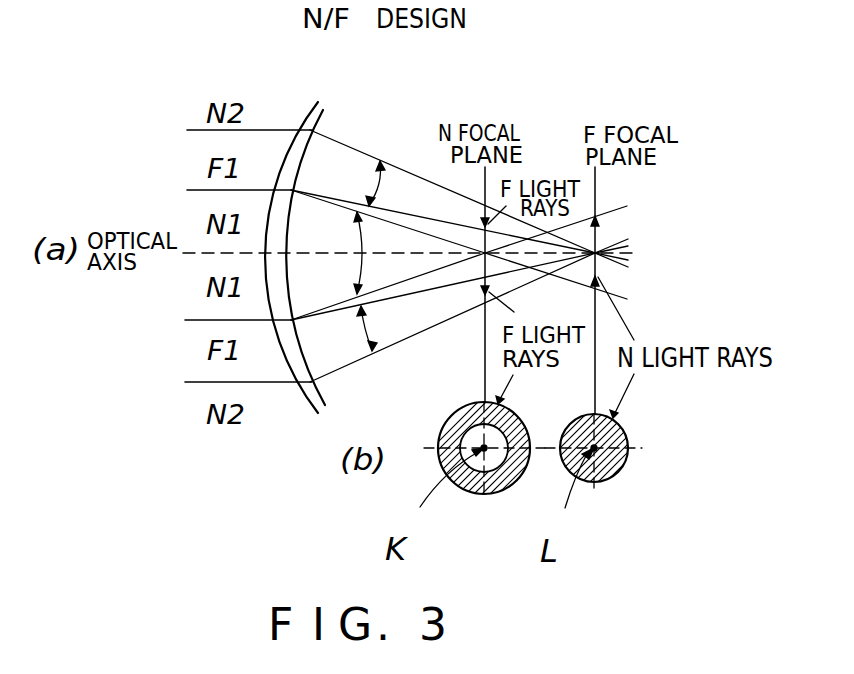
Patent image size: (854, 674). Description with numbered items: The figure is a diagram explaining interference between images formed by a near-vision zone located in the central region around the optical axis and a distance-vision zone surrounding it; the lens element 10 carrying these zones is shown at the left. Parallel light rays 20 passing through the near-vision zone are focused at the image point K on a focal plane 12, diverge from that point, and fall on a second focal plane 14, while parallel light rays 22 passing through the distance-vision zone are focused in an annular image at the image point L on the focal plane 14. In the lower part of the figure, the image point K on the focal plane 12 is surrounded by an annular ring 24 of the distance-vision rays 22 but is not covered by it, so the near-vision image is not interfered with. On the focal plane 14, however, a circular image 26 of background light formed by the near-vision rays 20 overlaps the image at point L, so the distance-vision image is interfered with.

The lens 10 is at (190, 253).
The focal plane 12 is at (483, 181).
The focal plane 14 is at (593, 179).
The parallel light rays 20 is at (356, 276).
The parallel light rays 22 is at (372, 180).
The annular ring 24 is at (474, 492).
The circular image 26 is at (621, 478).